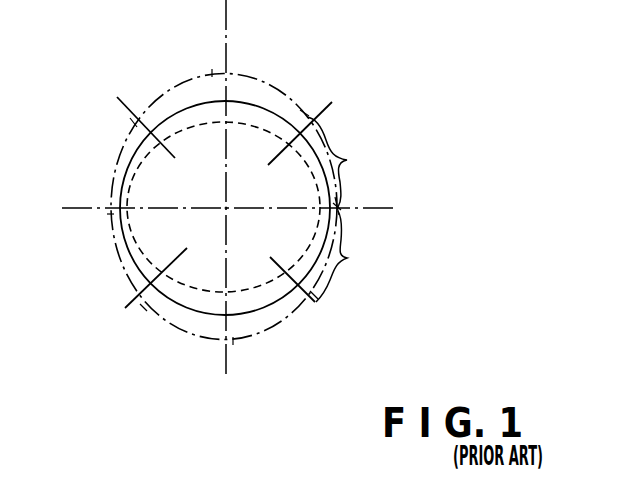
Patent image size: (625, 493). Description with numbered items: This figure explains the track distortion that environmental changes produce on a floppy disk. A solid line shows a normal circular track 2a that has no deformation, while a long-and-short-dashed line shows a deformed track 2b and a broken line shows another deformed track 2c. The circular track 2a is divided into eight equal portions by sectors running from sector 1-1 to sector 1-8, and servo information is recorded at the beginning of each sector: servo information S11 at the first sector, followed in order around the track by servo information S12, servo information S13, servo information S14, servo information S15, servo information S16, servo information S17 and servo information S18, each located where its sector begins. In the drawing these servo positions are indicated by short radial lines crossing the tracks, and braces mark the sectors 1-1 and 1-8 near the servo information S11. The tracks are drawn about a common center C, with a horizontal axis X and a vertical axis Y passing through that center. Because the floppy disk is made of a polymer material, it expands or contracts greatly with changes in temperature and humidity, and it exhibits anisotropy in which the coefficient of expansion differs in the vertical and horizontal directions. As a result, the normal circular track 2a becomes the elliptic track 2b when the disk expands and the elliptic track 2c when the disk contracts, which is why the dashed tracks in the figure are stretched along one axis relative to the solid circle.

The servo information S11 is at (345, 208).
The servo information S12 is at (305, 111).
The servo information S13 is at (213, 72).
The servo information S14 is at (132, 123).
The servo information S15 is at (110, 213).
The servo information S16 is at (133, 310).
The servo information S17 is at (229, 343).
The servo information S18 is at (317, 302).
The circular track 2a is at (250, 104).
The elliptic track 2b is at (165, 91).
The elliptic track 2c is at (138, 248).
The sector 1-1 is at (342, 162).
The sector 1-8 is at (346, 256).
The center C is at (226, 212).
The X axis X is at (230, 223).
The Y axis Y is at (234, 189).